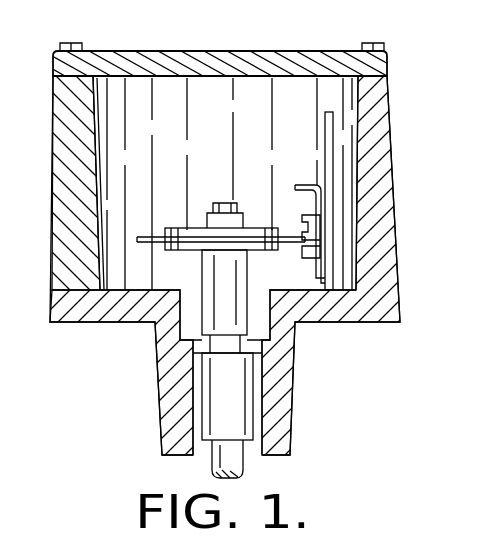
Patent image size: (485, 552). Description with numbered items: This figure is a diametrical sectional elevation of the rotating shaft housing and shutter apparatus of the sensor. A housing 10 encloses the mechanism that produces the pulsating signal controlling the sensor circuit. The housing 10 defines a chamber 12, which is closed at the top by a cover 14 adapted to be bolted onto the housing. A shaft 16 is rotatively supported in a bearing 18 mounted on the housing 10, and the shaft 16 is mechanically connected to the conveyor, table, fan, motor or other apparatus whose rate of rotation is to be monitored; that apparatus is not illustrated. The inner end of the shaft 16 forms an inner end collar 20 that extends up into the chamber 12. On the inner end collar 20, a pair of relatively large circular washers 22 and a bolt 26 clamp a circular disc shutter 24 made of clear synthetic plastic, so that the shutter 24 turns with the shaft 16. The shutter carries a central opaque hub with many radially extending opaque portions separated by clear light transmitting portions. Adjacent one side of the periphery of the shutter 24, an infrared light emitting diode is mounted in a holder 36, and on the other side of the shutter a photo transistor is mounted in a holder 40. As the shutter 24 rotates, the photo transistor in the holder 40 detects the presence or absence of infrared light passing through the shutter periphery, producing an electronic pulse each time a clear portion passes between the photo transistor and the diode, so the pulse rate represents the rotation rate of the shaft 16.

The housing 10 is at (383, 136).
The chamber 12 is at (276, 121).
The cover 14 is at (294, 56).
The shaft 16 is at (246, 462).
The bearing 18 is at (243, 384).
The inner end collar 20 is at (241, 283).
The circular washers 22 is at (186, 240).
The circular disc shutter 24 is at (146, 235).
The bolt 26 is at (242, 222).
The holder 36 is at (316, 224).
The holder 40 is at (332, 247).